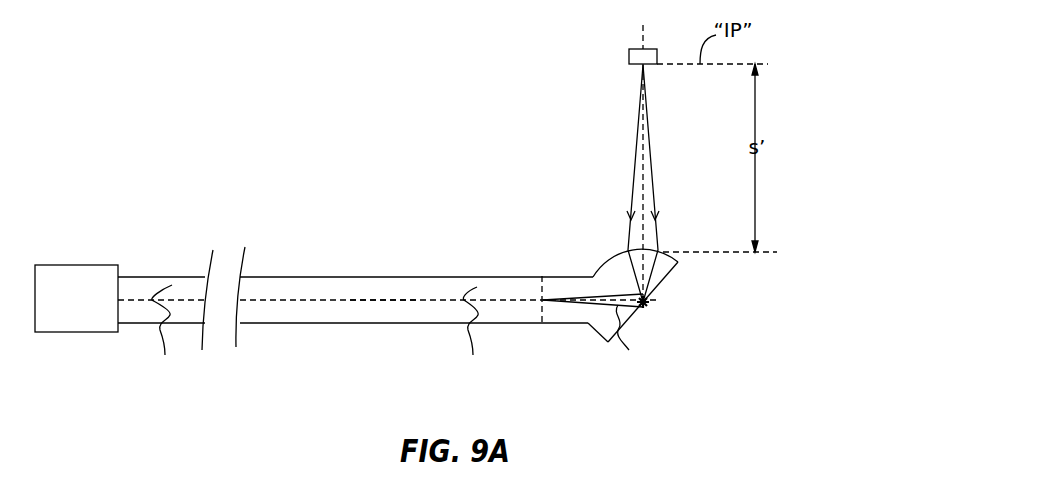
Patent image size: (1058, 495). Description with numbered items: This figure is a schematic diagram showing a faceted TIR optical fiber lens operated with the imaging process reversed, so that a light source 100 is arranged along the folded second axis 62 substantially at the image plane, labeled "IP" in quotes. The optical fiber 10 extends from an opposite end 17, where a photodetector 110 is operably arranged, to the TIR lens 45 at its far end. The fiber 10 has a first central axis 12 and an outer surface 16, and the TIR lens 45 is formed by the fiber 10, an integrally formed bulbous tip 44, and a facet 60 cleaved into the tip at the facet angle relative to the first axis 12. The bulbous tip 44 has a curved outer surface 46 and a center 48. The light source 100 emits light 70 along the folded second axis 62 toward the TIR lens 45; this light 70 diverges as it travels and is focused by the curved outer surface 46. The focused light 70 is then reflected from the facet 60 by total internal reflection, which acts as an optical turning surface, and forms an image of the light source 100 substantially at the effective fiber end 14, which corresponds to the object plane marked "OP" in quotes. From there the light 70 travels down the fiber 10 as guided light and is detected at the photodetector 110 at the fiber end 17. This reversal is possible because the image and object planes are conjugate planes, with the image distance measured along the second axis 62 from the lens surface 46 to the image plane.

The optical fiber 10 is at (397, 217).
The first axis 12 is at (411, 299).
The fiber end 14 is at (543, 288).
The outer surface 16 is at (352, 276).
The opposite end 17 is at (127, 276).
The bulbous tip 44 is at (607, 326).
The TIR lens 45 is at (615, 236).
The outer surface 46 is at (665, 256).
The center 48 is at (648, 307).
The facet 60 is at (672, 272).
The second axis 62 is at (648, 125).
The light 70 is at (700, 172).
The light source 100 is at (629, 57).
The photodetector 110 is at (87, 311).